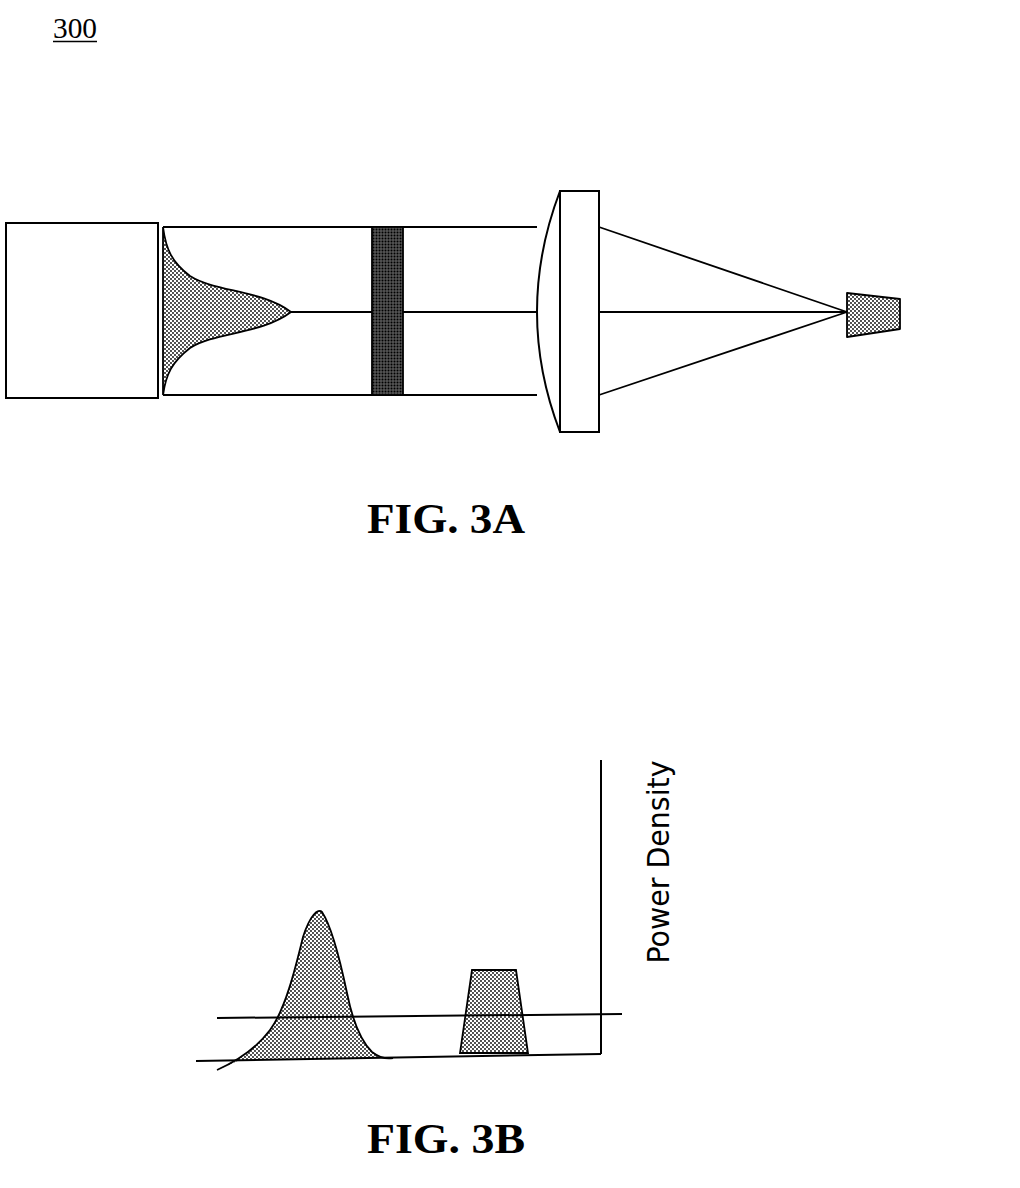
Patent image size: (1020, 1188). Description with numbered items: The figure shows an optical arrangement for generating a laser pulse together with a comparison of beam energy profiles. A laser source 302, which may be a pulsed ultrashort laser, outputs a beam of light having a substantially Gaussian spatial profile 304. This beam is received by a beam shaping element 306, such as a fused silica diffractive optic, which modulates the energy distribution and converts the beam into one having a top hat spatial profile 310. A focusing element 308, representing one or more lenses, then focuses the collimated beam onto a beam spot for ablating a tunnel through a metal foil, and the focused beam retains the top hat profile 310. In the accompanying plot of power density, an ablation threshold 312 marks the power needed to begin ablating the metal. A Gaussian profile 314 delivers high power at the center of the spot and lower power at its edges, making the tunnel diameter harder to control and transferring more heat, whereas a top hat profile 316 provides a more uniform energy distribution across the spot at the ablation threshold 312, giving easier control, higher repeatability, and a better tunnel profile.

In FIG. 3A, the laser source 302 is at (62, 223).
In FIG. 3A, the Gaussian spatial profile 304 is at (172, 257).
In FIG. 3A, the beam shaping element 306 is at (387, 225).
In FIG. 3A, the focusing element 308 is at (562, 191).
In FIG. 3A, the top hat spatial profile 310 is at (860, 293).
In FIG. 3B, the ablation threshold 312 is at (233, 1018).
In FIG. 3B, the Gaussian profile 314 is at (328, 922).
In FIG. 3B, the top hat profile 316 is at (495, 970).